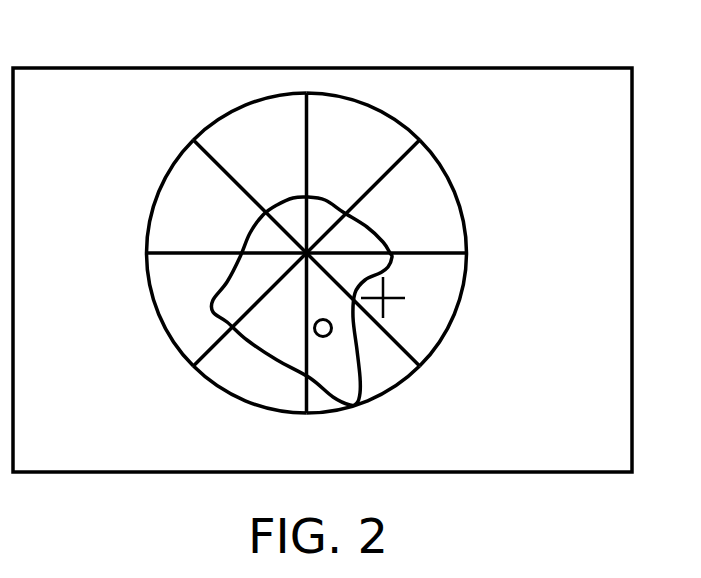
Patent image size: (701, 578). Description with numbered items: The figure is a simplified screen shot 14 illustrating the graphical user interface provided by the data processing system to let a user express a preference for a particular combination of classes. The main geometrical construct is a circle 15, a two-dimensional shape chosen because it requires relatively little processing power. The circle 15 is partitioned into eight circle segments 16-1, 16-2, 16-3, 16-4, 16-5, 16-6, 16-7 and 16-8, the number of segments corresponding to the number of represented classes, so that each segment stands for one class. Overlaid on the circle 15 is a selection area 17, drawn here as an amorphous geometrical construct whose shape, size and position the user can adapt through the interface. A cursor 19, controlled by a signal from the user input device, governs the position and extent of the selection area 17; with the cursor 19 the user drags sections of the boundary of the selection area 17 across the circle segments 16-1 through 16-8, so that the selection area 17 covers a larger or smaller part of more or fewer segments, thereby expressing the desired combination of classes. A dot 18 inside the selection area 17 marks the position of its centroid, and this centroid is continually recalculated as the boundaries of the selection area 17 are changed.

The screen shot 14 is at (352, 46).
The circle 15 is at (363, 88).
The circle segment 16-1 is at (368, 122).
The circle segment 16-2 is at (425, 180).
The circle segment 16-3 is at (445, 292).
The circle segment 16-4 is at (388, 367).
The circle segment 16-5 is at (245, 378).
The circle segment 16-6 is at (172, 298).
The circle segment 16-7 is at (177, 197).
The circle segment 16-8 is at (248, 132).
The selection area 17 is at (347, 238).
The dot 18 is at (327, 337).
The cursor 19 is at (393, 295).